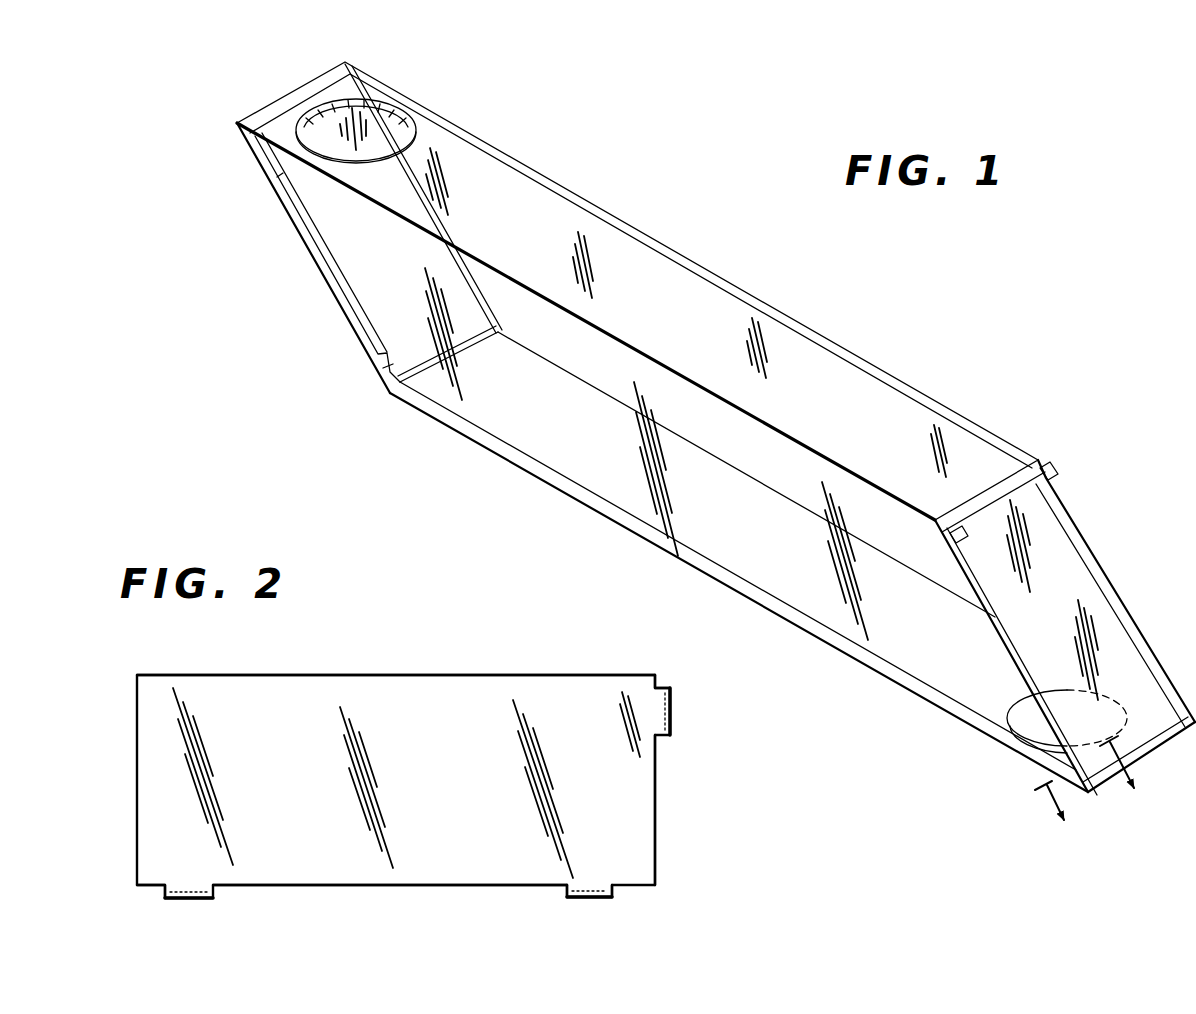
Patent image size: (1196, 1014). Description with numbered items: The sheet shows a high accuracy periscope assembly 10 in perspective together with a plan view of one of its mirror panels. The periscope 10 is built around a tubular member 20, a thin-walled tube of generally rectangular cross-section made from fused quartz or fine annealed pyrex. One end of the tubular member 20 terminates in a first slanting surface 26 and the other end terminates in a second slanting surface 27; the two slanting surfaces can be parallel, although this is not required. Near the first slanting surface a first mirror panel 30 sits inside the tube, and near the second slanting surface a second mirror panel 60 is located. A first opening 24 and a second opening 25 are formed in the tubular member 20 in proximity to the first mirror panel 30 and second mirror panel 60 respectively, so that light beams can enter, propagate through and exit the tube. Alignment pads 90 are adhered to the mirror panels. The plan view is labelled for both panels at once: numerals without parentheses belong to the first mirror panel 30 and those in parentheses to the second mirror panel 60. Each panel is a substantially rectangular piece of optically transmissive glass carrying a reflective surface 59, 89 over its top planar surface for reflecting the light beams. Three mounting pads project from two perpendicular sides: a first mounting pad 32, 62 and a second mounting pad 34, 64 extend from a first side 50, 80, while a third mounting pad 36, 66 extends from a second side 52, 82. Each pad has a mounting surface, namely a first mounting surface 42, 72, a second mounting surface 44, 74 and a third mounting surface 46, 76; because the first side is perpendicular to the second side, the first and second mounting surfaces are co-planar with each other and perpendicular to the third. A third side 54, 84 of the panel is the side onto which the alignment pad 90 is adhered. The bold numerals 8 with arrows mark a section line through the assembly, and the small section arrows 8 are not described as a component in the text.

In FIG. 1, the high accuracy periscope assembly 10 is at (947, 335).
In FIG. 1, the tubular member 20 is at (518, 162).
In FIG. 1, the first opening 24 is at (356, 92).
In FIG. 1, the second opening 25 is at (1022, 727).
In FIG. 1, the first slanting surface 26 is at (288, 221).
In FIG. 1, the second slanting surface 27 is at (1145, 619).
In FIG. 1, the first mirror panel 30 is at (340, 250).
In FIG. 2, the first mirror panel 30 is at (120, 712).
In FIG. 1, the second mirror panel 60 is at (1063, 563).
In FIG. 2, the second mirror panel 60 is at (426, 777).
In FIG. 1, the alignment pad 90 is at (1047, 771).
In FIG. 1, the section line 8- 8 is at (1098, 798).
In FIG. 2, the first mounting pad 32 is at (120, 859).
In FIG. 2, the second mounting pad 34 is at (680, 876).
In FIG. 2, the third mounting pad 36 is at (729, 673).
In FIG. 2, the first mounting surface 42 is at (123, 908).
In FIG. 2, the second mounting surface 44 is at (665, 911).
In FIG. 2, the third mounting surface 46 is at (742, 714).
In FIG. 2, the first side 50 is at (390, 903).
In FIG. 2, the second side 52 is at (729, 810).
In FIG. 2, the third side 54 is at (396, 649).
In FIG. 2, the reflective surface 59 is at (403, 786).
In FIG. 2, the first mounting pad 62 is at (188, 886).
In FIG. 2, the second mounting pad 64 is at (608, 883).
In FIG. 2, the third mounting pad 66 is at (666, 690).
In FIG. 2, the first mounting surface 72 is at (172, 901).
In FIG. 2, the second mounting surface 74 is at (602, 898).
In FIG. 2, the third mounting surface 76 is at (674, 720).
In FIG. 2, the first side 80 is at (368, 884).
In FIG. 2, the second side 82 is at (663, 800).
In FIG. 2, the third side 84 is at (276, 672).
In FIG. 2, the reflective surface 89 is at (495, 745).